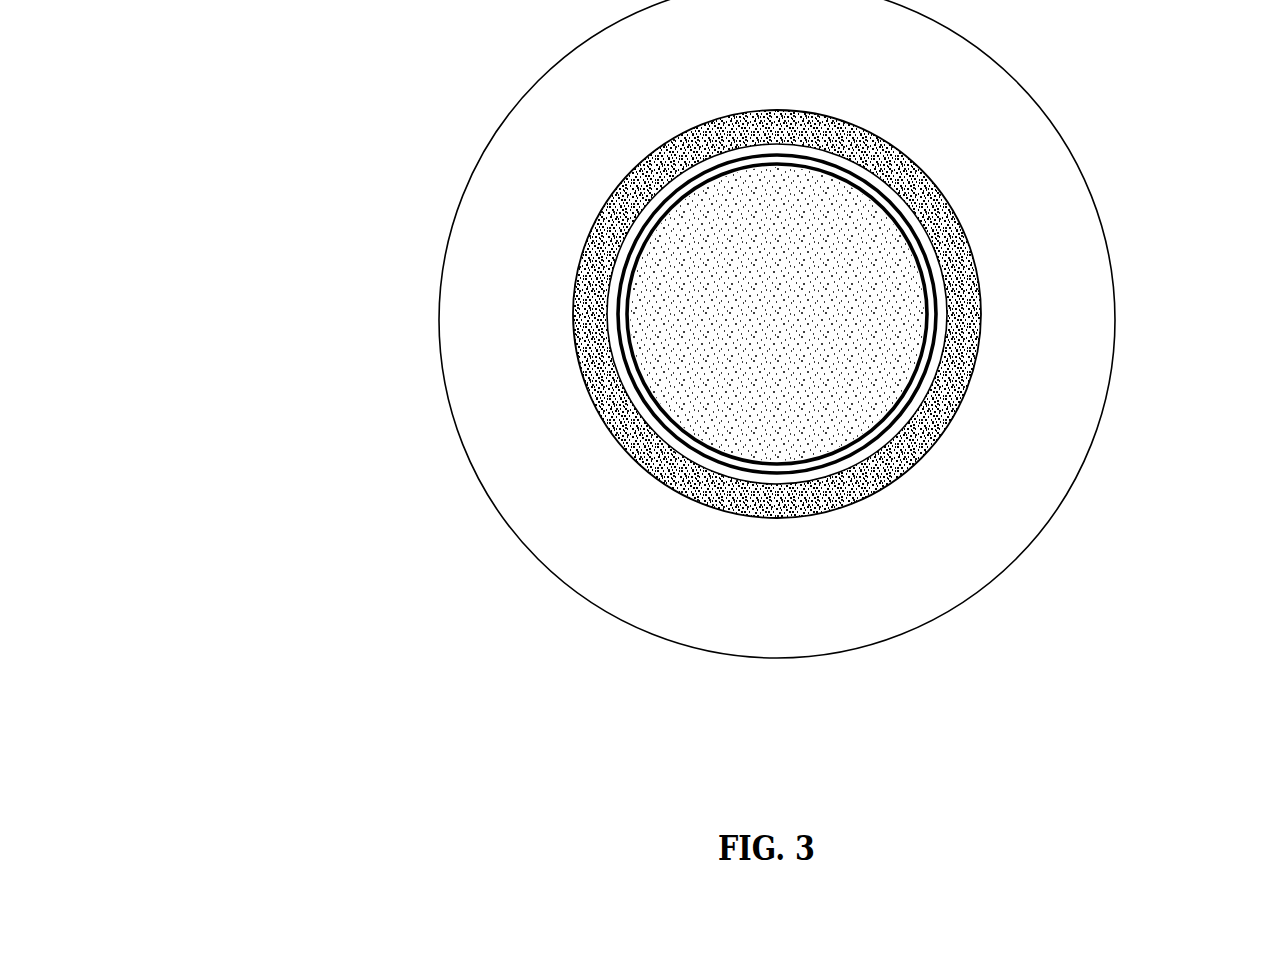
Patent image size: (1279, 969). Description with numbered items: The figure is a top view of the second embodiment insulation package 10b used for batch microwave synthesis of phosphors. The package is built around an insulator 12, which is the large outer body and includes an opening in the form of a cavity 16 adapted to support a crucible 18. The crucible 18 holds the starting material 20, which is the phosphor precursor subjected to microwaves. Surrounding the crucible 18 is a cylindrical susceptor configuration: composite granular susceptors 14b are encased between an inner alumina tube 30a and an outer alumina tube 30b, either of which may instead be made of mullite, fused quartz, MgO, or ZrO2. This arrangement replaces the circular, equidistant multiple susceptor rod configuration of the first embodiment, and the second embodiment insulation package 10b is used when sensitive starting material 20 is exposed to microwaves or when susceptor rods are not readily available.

The second embodiment insulation package 10b is at (385, 374).
The insulator 12 is at (903, 585).
The composite granular susceptors 14b is at (953, 370).
The cavity 16 is at (922, 392).
The crucible 18 is at (878, 436).
The starting material 20 is at (885, 265).
The inner alumina tube 30a is at (713, 158).
The outer alumina tube 30b is at (808, 110).